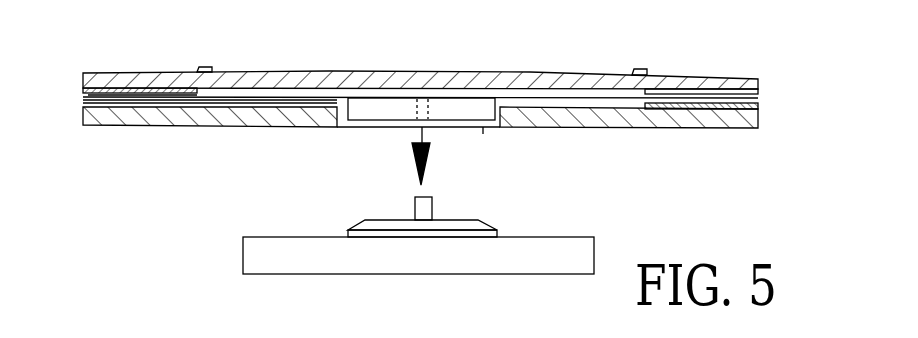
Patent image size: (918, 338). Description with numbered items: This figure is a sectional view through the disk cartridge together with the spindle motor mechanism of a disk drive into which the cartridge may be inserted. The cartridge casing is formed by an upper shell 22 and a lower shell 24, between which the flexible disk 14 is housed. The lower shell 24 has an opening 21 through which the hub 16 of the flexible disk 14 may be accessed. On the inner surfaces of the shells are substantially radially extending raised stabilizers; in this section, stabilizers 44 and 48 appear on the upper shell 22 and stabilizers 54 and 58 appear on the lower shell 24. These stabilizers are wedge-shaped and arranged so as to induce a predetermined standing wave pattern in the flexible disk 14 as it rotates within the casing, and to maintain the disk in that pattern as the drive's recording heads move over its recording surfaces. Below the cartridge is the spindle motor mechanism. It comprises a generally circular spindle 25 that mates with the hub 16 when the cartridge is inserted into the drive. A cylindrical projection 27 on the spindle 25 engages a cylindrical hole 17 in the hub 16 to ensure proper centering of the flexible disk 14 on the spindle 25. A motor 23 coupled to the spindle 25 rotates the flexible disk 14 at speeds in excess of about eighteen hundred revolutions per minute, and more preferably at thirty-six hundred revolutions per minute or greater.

The flexible disk 14 is at (277, 97).
The hub 16 is at (382, 110).
The cylindrical hole 17 is at (420, 100).
The opening 21 is at (483, 134).
The upper shell 22 is at (543, 80).
The motor 23 is at (280, 254).
The lower shell 24 is at (638, 112).
The spindle 25 is at (325, 228).
The cylindrical projection 27 is at (415, 202).
The stabilizer 44 is at (688, 92).
The stabilizer 48 is at (148, 86).
The stabilizer 54 is at (143, 100).
The stabilizer 58 is at (707, 110).